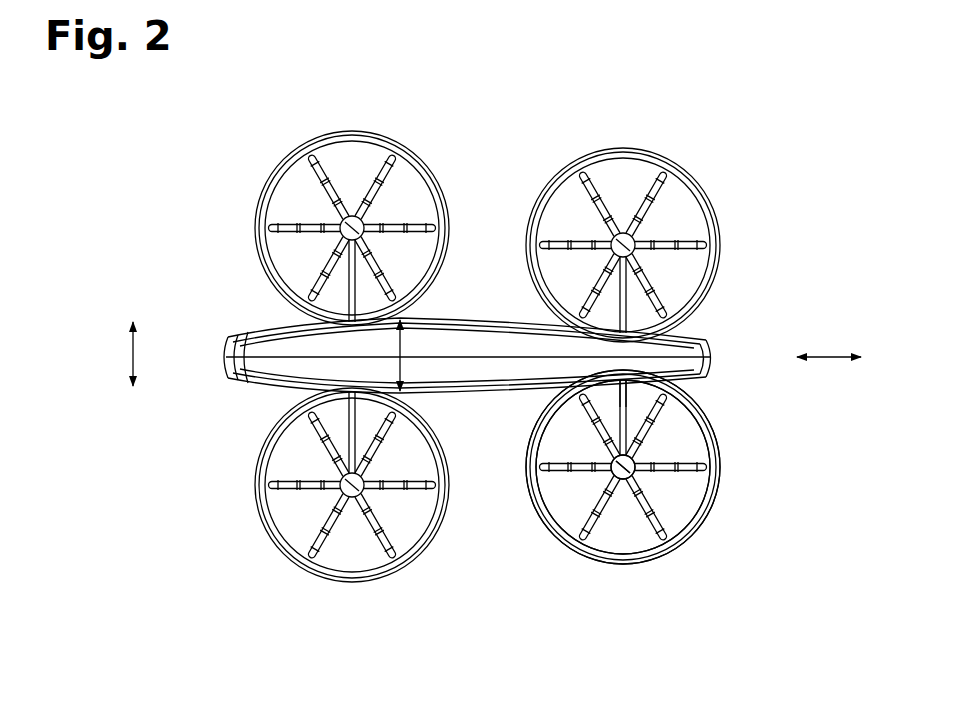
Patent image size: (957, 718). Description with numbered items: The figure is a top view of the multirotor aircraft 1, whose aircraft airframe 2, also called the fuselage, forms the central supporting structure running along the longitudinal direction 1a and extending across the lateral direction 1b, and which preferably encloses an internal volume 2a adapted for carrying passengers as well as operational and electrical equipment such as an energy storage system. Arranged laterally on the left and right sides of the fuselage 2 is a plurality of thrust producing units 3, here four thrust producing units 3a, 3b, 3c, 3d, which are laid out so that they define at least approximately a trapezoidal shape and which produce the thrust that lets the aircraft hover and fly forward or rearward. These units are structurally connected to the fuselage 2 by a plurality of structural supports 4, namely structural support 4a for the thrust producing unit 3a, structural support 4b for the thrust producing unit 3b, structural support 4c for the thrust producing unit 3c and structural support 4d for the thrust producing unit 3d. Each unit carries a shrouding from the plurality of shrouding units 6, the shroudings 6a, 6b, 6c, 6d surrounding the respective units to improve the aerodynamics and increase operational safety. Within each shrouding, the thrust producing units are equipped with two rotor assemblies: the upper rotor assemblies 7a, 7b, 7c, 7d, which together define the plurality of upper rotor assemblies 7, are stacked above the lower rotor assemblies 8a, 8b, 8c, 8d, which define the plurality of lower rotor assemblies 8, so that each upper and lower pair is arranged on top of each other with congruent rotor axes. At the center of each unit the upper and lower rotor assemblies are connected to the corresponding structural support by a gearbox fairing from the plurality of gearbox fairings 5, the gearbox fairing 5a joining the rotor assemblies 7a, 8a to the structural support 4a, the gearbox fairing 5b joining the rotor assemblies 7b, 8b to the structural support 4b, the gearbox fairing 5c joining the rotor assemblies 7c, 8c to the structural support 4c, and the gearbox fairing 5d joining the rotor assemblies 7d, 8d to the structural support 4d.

The multirotor aircraft 1 is at (200, 128).
The longitudinal direction 1a is at (833, 355).
The lateral direction 1b is at (130, 353).
The aircraft airframe 2 is at (226, 338).
The internal volume 2a is at (243, 387).
The plurality of thrust producing units 3 is at (623, 495).
The thrust producing unit 3a is at (352, 200).
The thrust producing unit 3b is at (655, 245).
The thrust producing unit 3c is at (324, 489).
The thrust producing unit 3d is at (655, 467).
The plurality of structural supports 4 is at (693, 362).
The structural support 4a is at (275, 281).
The structural support 4b is at (702, 295).
The structural support 4c is at (272, 434).
The structural support 4d is at (551, 417).
The plurality of gearbox fairings 5 is at (688, 505).
The gearbox fairing 5a is at (279, 232).
The gearbox fairing 5b is at (575, 193).
The gearbox fairing 5c is at (277, 505).
The gearbox fairing 5d is at (596, 537).
The plurality of shrouding units 6 is at (597, 477).
The shrouding 6a is at (317, 228).
The shrouding 6b is at (626, 203).
The shrouding 6c is at (371, 509).
The shrouding 6d is at (648, 494).
The plurality of upper rotor assemblies 7 is at (696, 426).
The upper rotor assembly 7a is at (338, 147).
The upper rotor assembly 7b is at (599, 156).
The upper rotor assembly 7c is at (376, 568).
The upper rotor assembly 7d is at (643, 547).
The plurality of lower rotor assemblies 8 is at (700, 486).
The lower rotor assembly 8a is at (417, 174).
The lower rotor assembly 8b is at (542, 265).
The lower rotor assembly 8c is at (328, 568).
The lower rotor assembly 8d is at (548, 439).